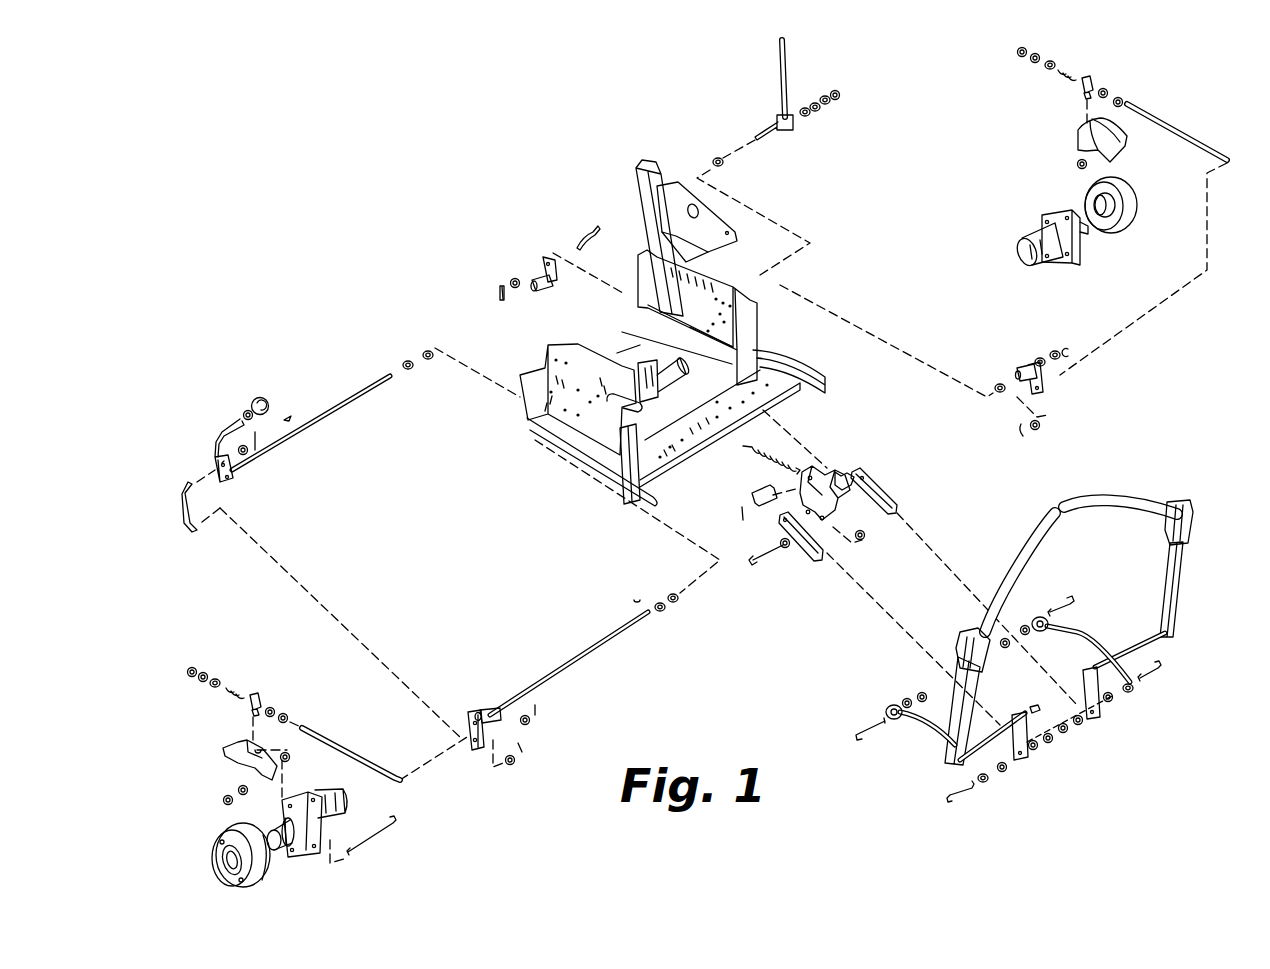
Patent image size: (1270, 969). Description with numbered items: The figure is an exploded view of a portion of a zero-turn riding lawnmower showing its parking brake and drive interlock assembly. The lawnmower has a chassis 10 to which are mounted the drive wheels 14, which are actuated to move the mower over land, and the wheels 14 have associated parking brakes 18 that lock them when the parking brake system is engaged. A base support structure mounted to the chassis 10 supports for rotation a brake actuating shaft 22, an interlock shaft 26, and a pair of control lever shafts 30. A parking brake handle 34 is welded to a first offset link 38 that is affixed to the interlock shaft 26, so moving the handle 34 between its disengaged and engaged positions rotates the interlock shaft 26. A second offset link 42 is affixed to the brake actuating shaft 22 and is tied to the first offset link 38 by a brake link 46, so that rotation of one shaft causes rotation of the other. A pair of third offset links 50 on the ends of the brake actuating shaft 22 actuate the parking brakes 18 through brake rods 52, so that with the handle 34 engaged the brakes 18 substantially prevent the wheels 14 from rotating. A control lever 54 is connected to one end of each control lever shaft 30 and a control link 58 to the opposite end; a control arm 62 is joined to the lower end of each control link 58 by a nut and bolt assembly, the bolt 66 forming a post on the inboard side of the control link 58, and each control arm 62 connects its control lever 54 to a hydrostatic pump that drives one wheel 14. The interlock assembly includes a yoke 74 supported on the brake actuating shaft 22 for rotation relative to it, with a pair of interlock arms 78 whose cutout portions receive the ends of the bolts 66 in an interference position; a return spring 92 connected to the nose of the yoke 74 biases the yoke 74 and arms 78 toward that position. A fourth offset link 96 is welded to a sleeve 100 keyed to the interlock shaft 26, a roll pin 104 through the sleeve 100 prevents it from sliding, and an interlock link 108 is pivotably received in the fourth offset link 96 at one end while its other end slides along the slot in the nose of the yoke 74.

The chassis 10 is at (592, 377).
The wheels 14 is at (243, 887).
The parking brakes 18 is at (233, 757).
The brake actuating shaft 22 is at (590, 648).
The interlock shaft 26 is at (356, 402).
The control lever shafts 30 is at (1142, 637).
The parking brake handle 34 is at (240, 421).
The first offset link 38 is at (233, 468).
The second offset link 42 is at (490, 710).
The brake link 46 is at (183, 517).
The third offset links 50 is at (467, 717).
The brake rods 52 is at (323, 733).
The control lever 54 is at (1180, 565).
The control link 58 is at (1088, 722).
The control arm 62 is at (1075, 633).
The bolt 66 is at (1153, 673).
The yoke 74 is at (823, 477).
The interlock arms 78 is at (870, 490).
The return spring 92 is at (757, 463).
The fourth offset link 96 is at (546, 258).
The sleeve 100 is at (545, 287).
The roll pin 104 is at (498, 292).
The interlock link 108 is at (590, 228).